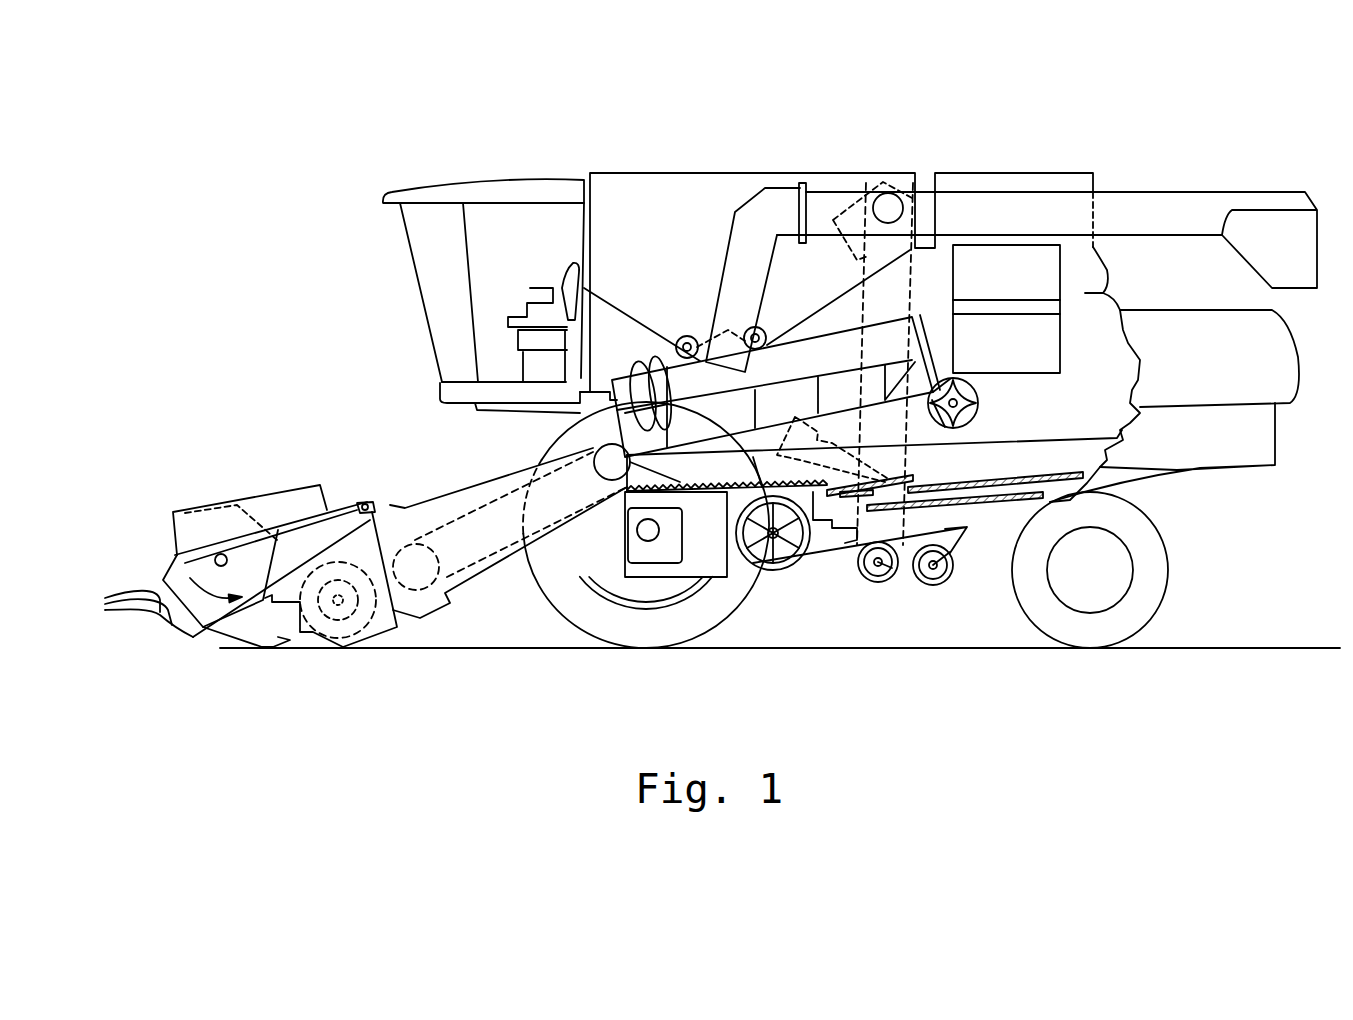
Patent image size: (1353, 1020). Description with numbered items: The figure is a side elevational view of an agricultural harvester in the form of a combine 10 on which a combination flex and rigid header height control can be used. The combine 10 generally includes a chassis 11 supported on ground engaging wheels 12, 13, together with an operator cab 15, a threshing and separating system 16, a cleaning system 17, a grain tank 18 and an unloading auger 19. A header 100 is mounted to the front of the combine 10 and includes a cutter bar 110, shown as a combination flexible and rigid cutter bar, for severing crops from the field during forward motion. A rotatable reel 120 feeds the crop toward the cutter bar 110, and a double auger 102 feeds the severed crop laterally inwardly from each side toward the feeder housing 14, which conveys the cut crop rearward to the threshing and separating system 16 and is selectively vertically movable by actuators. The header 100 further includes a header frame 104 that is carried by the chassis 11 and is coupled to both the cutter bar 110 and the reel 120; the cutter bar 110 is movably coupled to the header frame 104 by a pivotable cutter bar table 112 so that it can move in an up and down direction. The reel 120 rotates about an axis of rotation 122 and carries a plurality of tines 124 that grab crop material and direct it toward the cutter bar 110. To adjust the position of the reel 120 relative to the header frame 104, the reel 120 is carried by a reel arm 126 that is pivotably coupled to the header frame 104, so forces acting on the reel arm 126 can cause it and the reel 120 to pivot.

The combine 10 is at (474, 152).
The chassis 11 is at (1073, 502).
The ground engaging wheel 12 is at (558, 610).
The ground engaging wheel 13 is at (1162, 592).
The feeder housing 14 is at (457, 488).
The operator cab 15 is at (418, 273).
The threshing and separating system 16 is at (545, 432).
The cleaning system 17 is at (838, 590).
The grain tank 18 is at (640, 178).
The unloading auger 19 is at (1178, 200).
The header 100 is at (250, 470).
The double auger 102 is at (340, 621).
The header frame 104 is at (378, 623).
The cutter bar 110 is at (263, 647).
The cutter bar table 112 is at (276, 647).
The reel 120 is at (173, 565).
The axis of rotation 122 is at (220, 556).
The tines 124 is at (108, 601).
The reel arm 126 is at (335, 510).